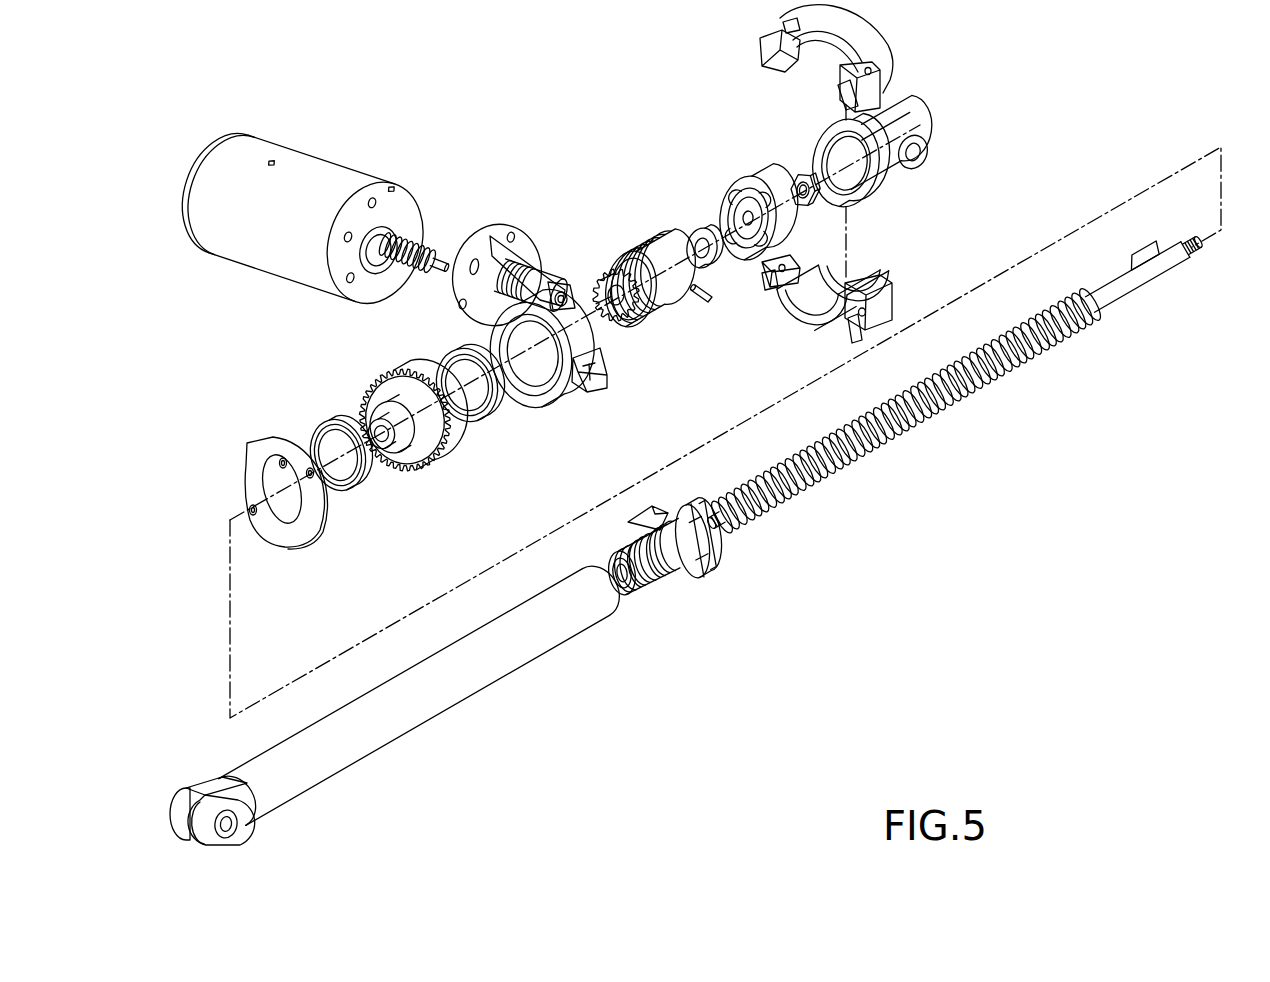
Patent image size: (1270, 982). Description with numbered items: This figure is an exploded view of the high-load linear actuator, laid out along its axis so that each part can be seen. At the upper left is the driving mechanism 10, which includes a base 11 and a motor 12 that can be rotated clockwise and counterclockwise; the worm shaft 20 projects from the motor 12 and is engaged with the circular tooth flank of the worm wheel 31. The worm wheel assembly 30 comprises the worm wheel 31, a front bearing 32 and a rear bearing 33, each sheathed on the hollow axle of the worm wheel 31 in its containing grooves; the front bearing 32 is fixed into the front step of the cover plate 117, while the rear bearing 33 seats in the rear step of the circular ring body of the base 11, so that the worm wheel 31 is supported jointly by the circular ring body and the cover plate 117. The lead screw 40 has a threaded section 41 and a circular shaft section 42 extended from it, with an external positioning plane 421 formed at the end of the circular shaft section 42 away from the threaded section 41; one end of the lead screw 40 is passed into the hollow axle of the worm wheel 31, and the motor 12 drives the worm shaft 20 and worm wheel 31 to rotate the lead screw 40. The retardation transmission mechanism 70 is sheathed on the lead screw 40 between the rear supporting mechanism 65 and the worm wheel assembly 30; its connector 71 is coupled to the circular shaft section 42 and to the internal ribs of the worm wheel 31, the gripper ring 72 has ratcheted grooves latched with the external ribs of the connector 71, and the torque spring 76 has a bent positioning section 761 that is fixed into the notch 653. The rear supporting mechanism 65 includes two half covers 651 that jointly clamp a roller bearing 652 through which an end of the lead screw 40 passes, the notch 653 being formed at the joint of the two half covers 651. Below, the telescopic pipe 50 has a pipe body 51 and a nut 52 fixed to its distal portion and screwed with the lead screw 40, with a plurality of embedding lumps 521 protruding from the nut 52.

The driving mechanism 10 is at (440, 157).
The base 11 is at (549, 262).
The motor 12 is at (286, 165).
The worm shaft 20 is at (438, 255).
The worm wheel assembly 30 is at (400, 303).
The worm wheel 31 is at (382, 377).
The front bearing 32 is at (333, 422).
The rear bearing 33 is at (450, 350).
The cover plate 117 is at (248, 467).
The retardation transmission mechanism 70 is at (634, 224).
The connector 71 is at (612, 280).
The gripper ring 72 is at (650, 312).
The torque spring 76 is at (700, 232).
The positioning section 761 is at (712, 303).
The rear supporting mechanism 65 is at (697, 25).
The half covers 651 is at (800, 22).
The roller bearing 652 is at (757, 178).
The notch 653 is at (872, 312).
The lead screw 40 is at (962, 418).
The threaded section 41 is at (1033, 357).
The circular shaft section 42 is at (1118, 297).
The external positioning plane 421 is at (1152, 262).
The telescopic pipe 50 is at (692, 657).
The pipe body 51 is at (550, 642).
The nut 52 is at (669, 598).
The embedding lumps 521 is at (708, 567).